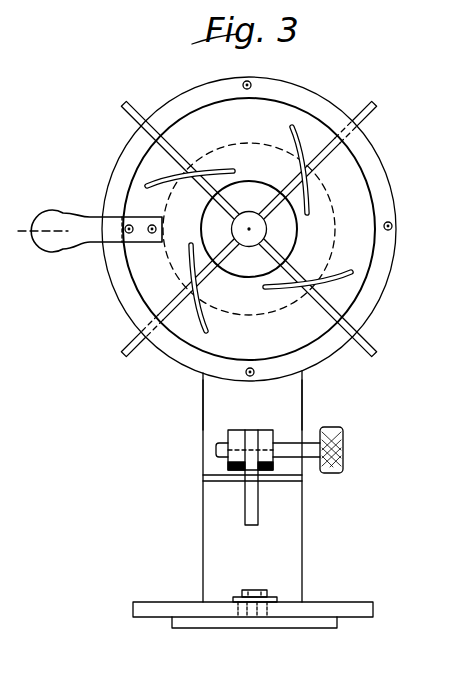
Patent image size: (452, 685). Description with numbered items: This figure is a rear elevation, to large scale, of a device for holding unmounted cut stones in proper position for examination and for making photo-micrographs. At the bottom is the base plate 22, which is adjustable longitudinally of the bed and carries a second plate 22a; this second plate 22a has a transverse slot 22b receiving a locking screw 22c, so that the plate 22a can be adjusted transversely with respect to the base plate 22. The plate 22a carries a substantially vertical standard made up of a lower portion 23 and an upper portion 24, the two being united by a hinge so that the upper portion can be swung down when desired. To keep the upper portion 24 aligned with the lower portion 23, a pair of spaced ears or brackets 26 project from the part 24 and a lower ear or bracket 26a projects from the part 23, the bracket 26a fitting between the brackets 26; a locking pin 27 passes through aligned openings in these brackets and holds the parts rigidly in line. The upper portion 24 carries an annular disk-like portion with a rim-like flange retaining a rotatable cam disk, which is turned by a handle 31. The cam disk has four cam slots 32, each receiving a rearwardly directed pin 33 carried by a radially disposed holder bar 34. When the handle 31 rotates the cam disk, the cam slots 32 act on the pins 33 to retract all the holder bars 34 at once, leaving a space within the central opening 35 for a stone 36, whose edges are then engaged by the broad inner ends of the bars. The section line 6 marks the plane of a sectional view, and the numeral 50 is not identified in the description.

The section line 6- 6 is at (23, 247).
The disc rim 50 is at (367, 259).
The cam slot 32 is at (363, 287).
The holder bar 34 is at (375, 343).
The pin 33 is at (304, 165).
The central opening 35 is at (290, 223).
The stone 36 is at (248, 212).
The handle 31 is at (74, 243).
The lower portion of the standard 23 is at (288, 547).
The upper portion of the standard 24 is at (288, 398).
The ears or brackets 26 is at (262, 430).
The lower ear or bracket 26a is at (250, 503).
The locking pin 27 is at (308, 442).
The base plate 22 is at (305, 620).
The second plate 22a is at (333, 601).
The transverse slot 22b is at (268, 598).
The locking screw 22c is at (240, 590).